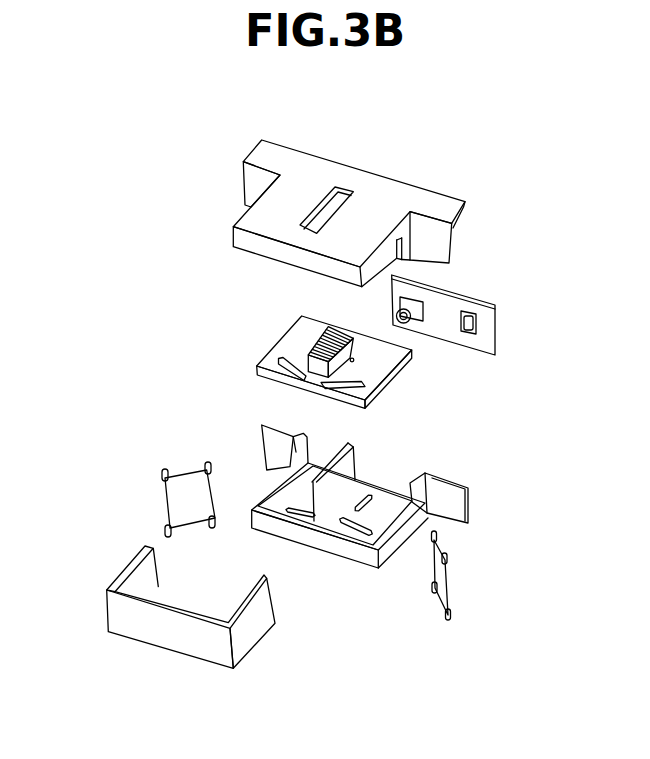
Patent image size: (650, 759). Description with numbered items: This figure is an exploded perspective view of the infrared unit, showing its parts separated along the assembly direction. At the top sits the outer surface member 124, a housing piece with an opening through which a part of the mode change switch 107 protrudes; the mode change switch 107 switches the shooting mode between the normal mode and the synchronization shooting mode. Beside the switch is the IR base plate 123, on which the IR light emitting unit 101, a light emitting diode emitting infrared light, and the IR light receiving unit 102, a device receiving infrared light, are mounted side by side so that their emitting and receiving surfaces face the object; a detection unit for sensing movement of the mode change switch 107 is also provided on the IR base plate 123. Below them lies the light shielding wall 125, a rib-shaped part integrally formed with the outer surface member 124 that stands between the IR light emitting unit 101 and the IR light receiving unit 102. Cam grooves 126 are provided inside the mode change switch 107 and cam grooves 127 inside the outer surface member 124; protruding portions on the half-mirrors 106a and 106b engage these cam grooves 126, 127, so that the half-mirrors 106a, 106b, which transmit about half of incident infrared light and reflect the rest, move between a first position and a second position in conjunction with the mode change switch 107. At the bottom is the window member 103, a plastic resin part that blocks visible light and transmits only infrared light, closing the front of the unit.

The outer surface member 124 is at (255, 142).
The IR base plate 123 is at (493, 355).
The IR light emitting unit 101 is at (420, 303).
The IR light receiving unit 102 is at (477, 322).
The mode change switch 107 is at (292, 316).
The cam grooves 126 is at (280, 360).
The light shielding wall 125 is at (317, 517).
The cam grooves 127 is at (291, 516).
The half-mirror 106a is at (170, 502).
The half-mirror 106b is at (453, 603).
The window member 103 is at (160, 647).